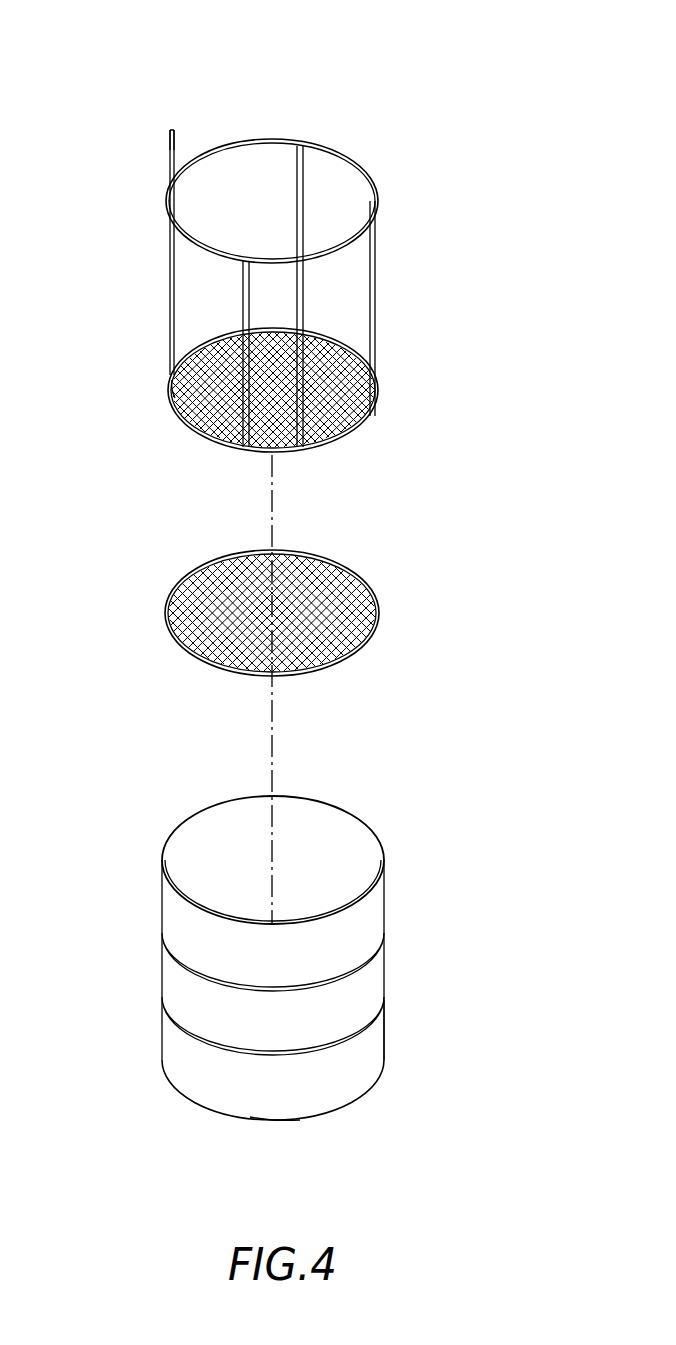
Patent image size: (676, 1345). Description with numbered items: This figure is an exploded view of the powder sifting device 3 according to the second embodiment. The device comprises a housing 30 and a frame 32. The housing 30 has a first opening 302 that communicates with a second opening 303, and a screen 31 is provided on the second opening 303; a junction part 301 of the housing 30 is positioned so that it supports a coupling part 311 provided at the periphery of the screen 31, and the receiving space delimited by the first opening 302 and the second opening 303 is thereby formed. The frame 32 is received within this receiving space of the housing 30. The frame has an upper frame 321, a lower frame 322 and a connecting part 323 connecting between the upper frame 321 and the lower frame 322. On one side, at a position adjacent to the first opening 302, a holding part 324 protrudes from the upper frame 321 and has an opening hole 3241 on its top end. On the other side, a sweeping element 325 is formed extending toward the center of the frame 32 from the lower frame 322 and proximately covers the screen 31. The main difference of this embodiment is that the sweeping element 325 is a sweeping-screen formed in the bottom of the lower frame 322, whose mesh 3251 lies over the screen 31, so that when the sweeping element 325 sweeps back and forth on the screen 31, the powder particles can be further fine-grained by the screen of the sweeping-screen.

The powder sifting device 3 is at (556, 93).
The housing 30 is at (433, 888).
The junction part 301 is at (374, 1083).
The first opening 302 is at (333, 836).
The second opening 303 is at (351, 1134).
The screen 31 is at (440, 590).
The coupling part 311 is at (358, 567).
The frame 32 is at (436, 262).
The upper frame 321 is at (292, 145).
The lower frame 322 is at (363, 425).
The connecting part 323 is at (376, 325).
The holding part 324 is at (169, 163).
The opening hole 3241 is at (173, 130).
The sweeping element 325 is at (198, 352).
The rim of bottom mesh 3251 is at (193, 376).